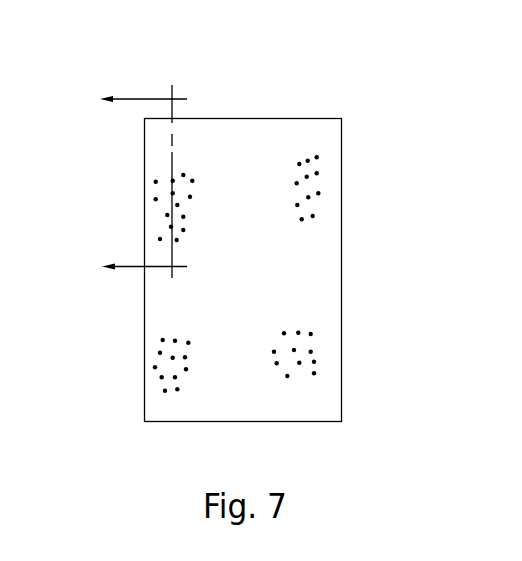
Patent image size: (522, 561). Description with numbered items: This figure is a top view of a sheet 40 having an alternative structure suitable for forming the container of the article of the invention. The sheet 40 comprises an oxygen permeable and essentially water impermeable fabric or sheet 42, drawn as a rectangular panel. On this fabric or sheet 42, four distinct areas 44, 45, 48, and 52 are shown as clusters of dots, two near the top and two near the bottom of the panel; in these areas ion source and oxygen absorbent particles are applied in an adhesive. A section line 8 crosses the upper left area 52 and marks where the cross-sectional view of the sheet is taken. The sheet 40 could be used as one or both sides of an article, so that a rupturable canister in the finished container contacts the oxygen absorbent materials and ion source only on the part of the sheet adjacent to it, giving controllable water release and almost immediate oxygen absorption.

The sheet 40 is at (304, 103).
The oxygen permeable and essentially water impermeable fabric or sheet 42 is at (277, 280).
The area 44 is at (317, 173).
The area 45 is at (311, 352).
The area 48 is at (160, 353).
The area 52 is at (155, 198).
The section line 8- 8 is at (147, 183).